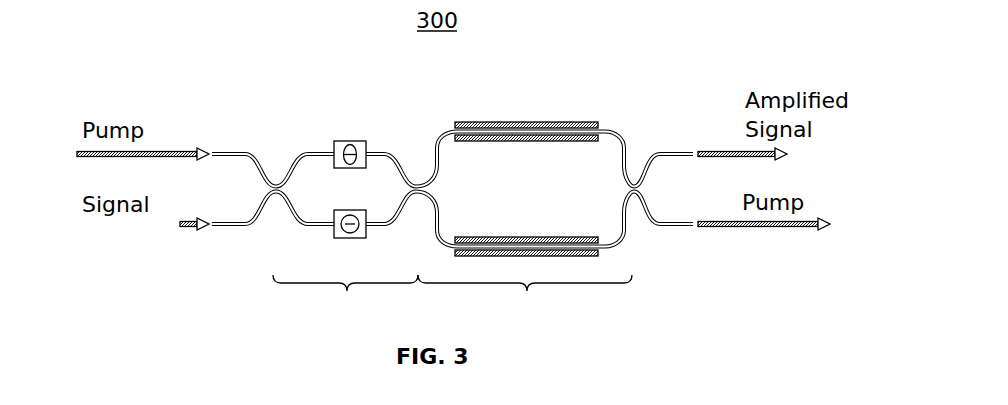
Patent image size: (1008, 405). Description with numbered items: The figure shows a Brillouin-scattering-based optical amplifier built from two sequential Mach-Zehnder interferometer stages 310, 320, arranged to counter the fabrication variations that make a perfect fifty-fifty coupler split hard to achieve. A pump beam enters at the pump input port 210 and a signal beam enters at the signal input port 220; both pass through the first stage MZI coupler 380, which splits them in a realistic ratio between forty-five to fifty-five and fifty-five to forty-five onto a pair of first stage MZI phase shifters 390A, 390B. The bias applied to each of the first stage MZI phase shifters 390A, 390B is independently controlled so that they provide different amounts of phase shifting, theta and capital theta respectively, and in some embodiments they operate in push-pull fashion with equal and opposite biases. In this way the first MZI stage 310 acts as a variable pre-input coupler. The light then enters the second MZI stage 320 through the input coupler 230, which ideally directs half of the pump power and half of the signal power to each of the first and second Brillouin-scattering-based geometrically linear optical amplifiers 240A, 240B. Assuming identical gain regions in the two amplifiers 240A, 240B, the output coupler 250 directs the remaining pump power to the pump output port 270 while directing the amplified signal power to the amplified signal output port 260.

The pump input port 210 is at (208, 142).
The signal input port 220 is at (207, 235).
The first stage MZI coupler 380 is at (276, 170).
The first stage MZI phase shifter 390A is at (348, 139).
The first stage MZI phase shifter 390B is at (348, 241).
The input coupler 230 is at (418, 170).
The first Brillouin-scattering-based geometrically linear optical amplifier 240A is at (543, 119).
The second Brillouin-scattering-based geometrically linear optical amplifier 240B is at (579, 259).
The output coupler 250 is at (636, 172).
The amplified signal output port 260 is at (700, 146).
The pump output port 270 is at (700, 234).
The first MZI stage 310 is at (345, 300).
The second MZI stage 320 is at (525, 300).